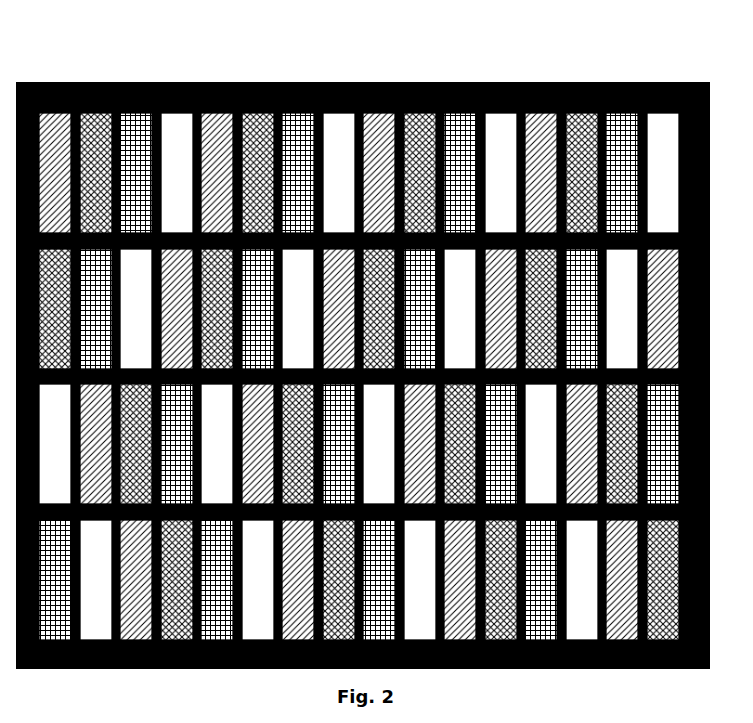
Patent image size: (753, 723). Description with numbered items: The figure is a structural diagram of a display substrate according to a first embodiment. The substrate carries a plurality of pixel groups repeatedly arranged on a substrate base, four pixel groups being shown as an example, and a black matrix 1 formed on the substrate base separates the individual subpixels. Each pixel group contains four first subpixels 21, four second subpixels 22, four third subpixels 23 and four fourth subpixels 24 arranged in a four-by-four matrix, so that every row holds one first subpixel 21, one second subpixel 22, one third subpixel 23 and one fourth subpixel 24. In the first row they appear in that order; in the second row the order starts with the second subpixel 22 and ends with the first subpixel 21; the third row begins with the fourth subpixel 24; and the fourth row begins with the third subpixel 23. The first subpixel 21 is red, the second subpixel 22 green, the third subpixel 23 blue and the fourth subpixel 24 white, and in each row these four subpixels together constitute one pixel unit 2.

The black matrix 1 is at (295, 83).
The pixel unit 2 is at (123, 122).
The first subpixel 21 is at (47, 121).
The second subpixel 22 is at (90, 122).
The third subpixel 23 is at (132, 121).
The fourth subpixel 24 is at (184, 138).